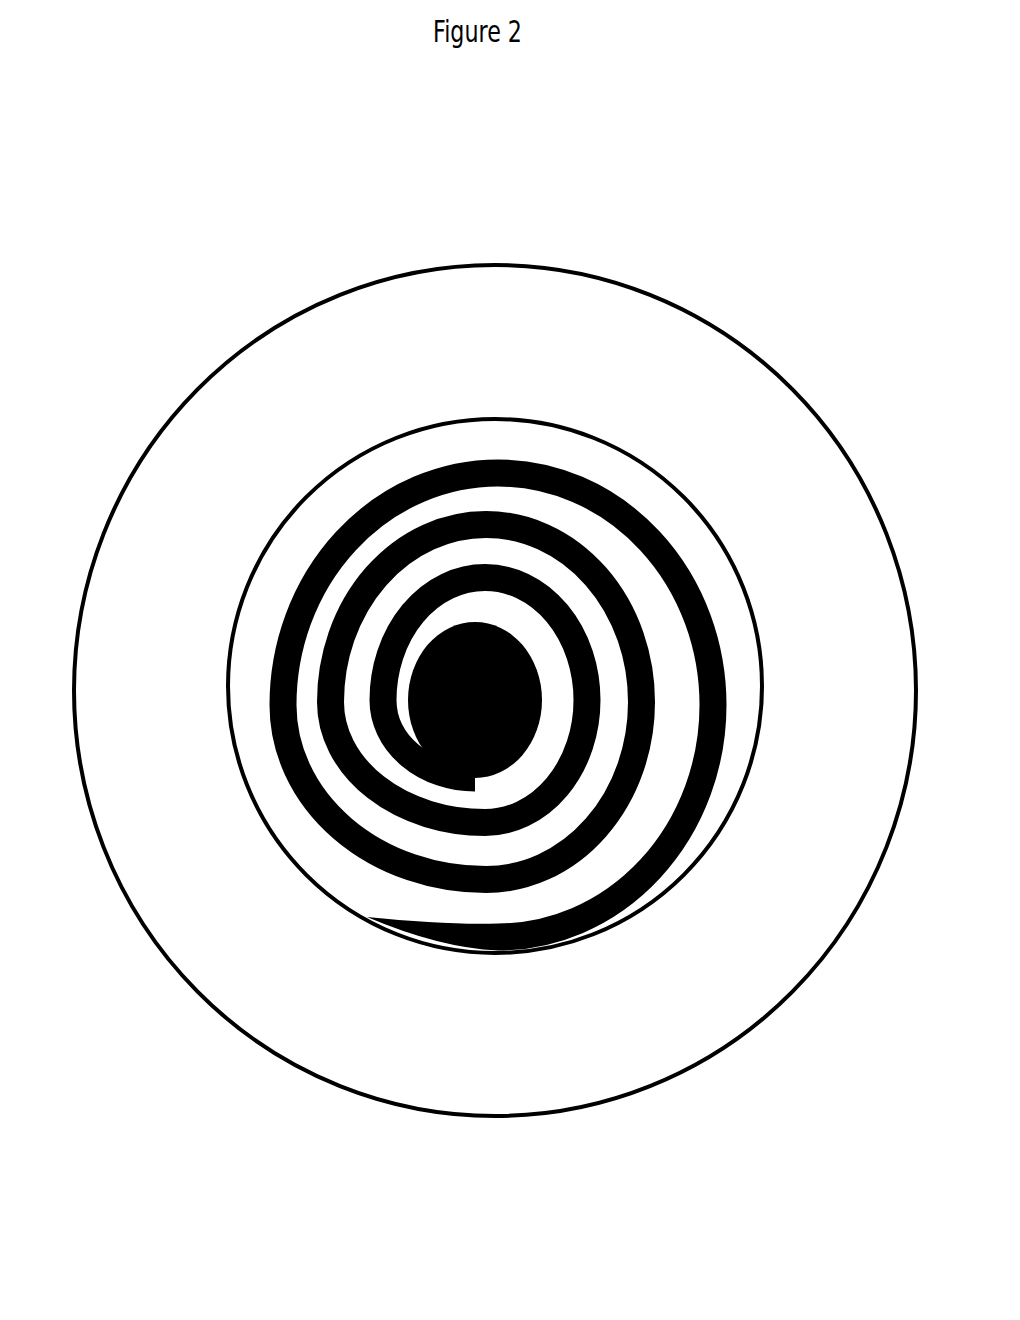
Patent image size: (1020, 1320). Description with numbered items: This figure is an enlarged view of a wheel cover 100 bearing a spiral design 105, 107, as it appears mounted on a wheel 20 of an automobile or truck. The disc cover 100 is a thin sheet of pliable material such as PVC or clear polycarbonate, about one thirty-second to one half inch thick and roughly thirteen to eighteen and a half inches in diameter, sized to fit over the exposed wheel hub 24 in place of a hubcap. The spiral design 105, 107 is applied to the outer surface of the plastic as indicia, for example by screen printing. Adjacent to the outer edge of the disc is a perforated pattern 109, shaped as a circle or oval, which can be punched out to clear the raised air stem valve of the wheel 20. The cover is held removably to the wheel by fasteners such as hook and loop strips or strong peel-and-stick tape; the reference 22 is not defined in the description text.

The wheel 20 is at (305, 184).
The outer annular sidewall region 22 is at (800, 445).
The wheel hub 24 is at (317, 895).
The wheel cover 100 is at (665, 646).
The spiral design 105 is at (390, 490).
The spiral design 107 is at (316, 762).
The perforated pattern 109 is at (614, 497).